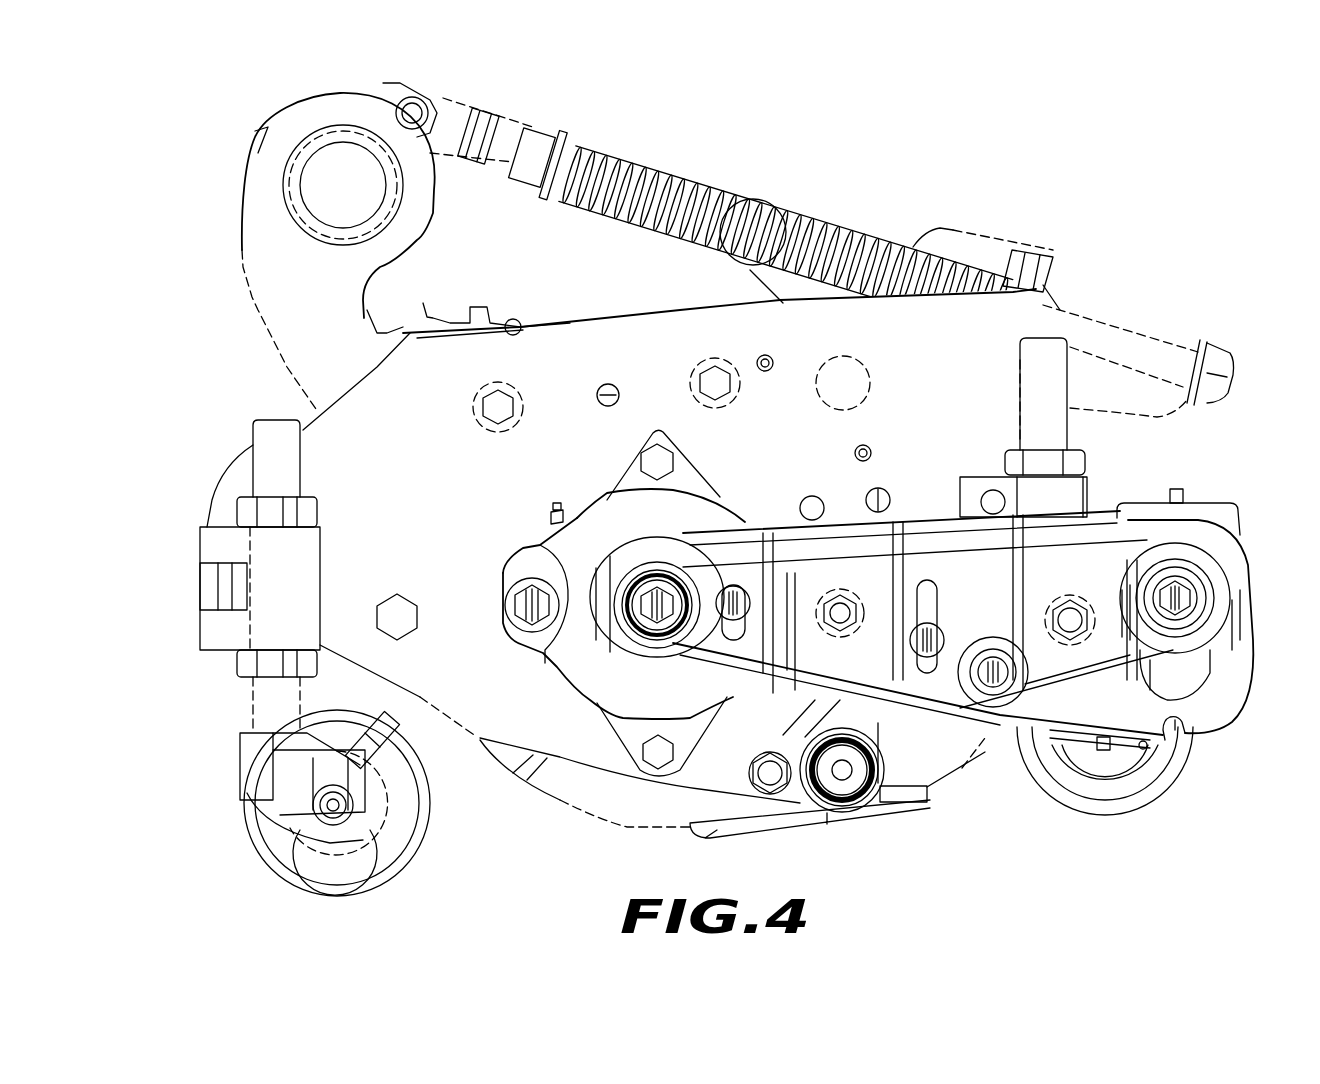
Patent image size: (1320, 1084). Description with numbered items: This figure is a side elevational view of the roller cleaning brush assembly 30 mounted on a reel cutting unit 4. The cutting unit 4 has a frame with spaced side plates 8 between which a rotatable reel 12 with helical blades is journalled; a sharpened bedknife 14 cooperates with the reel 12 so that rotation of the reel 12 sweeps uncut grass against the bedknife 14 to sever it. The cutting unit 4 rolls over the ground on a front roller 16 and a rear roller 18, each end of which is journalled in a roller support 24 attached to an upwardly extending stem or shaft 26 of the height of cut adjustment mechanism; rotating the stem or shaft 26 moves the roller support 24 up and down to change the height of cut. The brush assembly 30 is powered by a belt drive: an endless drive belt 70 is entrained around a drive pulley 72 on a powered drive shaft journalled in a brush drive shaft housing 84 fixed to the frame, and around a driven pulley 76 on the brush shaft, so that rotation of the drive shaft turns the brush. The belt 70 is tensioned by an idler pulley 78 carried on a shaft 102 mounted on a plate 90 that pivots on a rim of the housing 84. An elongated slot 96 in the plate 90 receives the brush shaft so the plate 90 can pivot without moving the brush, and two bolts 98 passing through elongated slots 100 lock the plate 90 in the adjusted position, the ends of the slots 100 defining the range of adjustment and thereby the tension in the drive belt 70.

The reel cutting unit 4 is at (849, 203).
The side plate 8 is at (647, 337).
The reel 12 is at (563, 810).
The bedknife 14 is at (777, 830).
The front roller 16 is at (263, 862).
The rear roller 18 is at (1187, 762).
The roller support 24 is at (240, 768).
The stem or shaft 26 is at (253, 447).
The roller cleaning brush assembly 30 is at (980, 783).
The drive belt 70 is at (1149, 630).
The drive pulley 72 is at (660, 567).
The driven pulley 76 is at (1217, 577).
The idler pulley 78 is at (988, 705).
The brush drive shaft housing 84 is at (592, 525).
The plate 90 is at (935, 525).
The elongated slot 96 is at (1213, 653).
The bolts 98 is at (752, 605).
The elongated slots 100 is at (737, 573).
The shaft 102 is at (1005, 668).